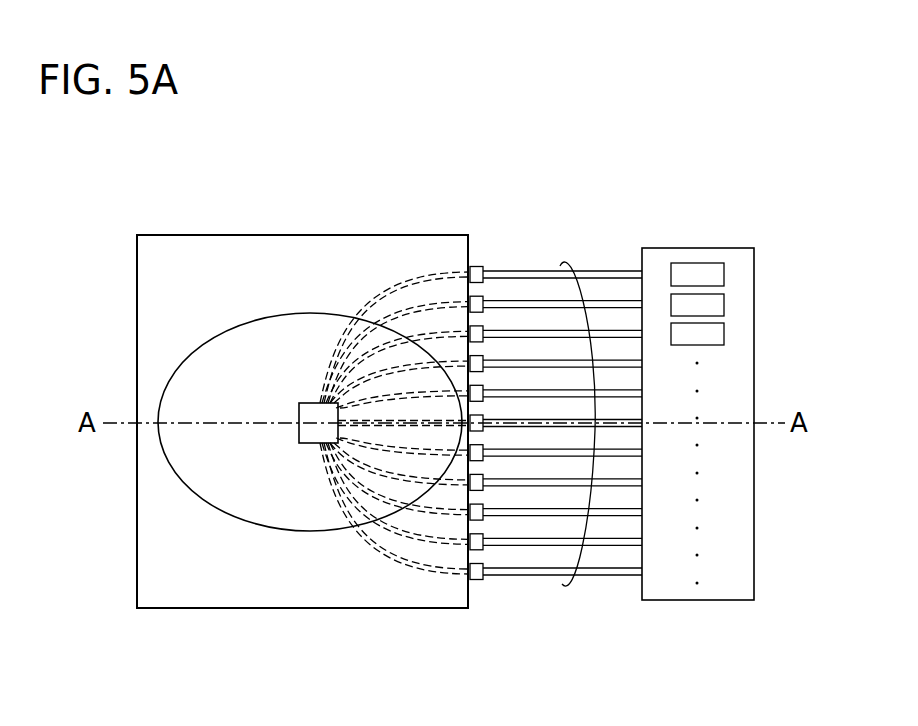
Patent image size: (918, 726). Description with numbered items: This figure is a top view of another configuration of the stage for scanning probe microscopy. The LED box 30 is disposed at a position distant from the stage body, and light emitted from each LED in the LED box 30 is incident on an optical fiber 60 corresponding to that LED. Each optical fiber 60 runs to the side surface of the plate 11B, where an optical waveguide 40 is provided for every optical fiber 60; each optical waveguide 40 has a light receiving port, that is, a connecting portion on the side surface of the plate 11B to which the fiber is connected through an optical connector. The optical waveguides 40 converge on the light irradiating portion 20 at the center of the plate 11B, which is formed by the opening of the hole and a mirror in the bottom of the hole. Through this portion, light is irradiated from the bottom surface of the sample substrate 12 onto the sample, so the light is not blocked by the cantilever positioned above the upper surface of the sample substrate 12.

The plate 11B is at (136, 583).
The sample substrate 12 is at (256, 365).
The light irradiating portion 20 is at (313, 432).
The optical waveguide 40 is at (436, 572).
The optical fiber 60 is at (543, 263).
The LED box 30 is at (697, 248).